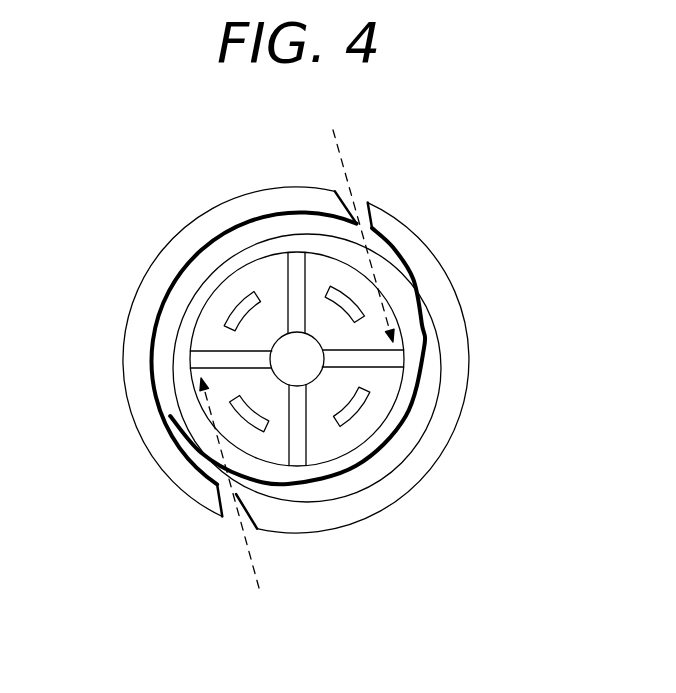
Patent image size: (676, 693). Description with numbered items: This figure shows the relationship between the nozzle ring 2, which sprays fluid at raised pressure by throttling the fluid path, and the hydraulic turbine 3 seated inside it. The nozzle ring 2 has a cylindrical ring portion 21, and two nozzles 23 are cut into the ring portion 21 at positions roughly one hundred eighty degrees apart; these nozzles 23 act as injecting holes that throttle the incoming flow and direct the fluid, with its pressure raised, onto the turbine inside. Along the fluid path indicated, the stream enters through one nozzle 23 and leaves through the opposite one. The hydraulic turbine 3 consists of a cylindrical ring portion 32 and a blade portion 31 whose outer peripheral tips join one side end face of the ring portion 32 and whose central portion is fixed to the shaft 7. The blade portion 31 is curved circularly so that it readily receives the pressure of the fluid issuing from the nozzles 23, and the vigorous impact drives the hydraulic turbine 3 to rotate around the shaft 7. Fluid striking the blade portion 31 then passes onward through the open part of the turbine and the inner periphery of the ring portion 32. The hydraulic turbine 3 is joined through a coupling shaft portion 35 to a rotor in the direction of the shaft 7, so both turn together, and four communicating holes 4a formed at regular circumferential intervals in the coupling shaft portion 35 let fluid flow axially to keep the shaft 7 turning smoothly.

The nozzle ring 2 is at (430, 169).
The hydraulic turbine 3 is at (364, 299).
The communicating holes 4a is at (340, 298).
The shaft 7 is at (278, 352).
The ring portion 21 is at (137, 428).
The nozzles 23 is at (366, 202).
The blade portion 31 is at (312, 455).
The ring portion 32 is at (403, 413).
The coupling shaft portion 35 is at (390, 378).